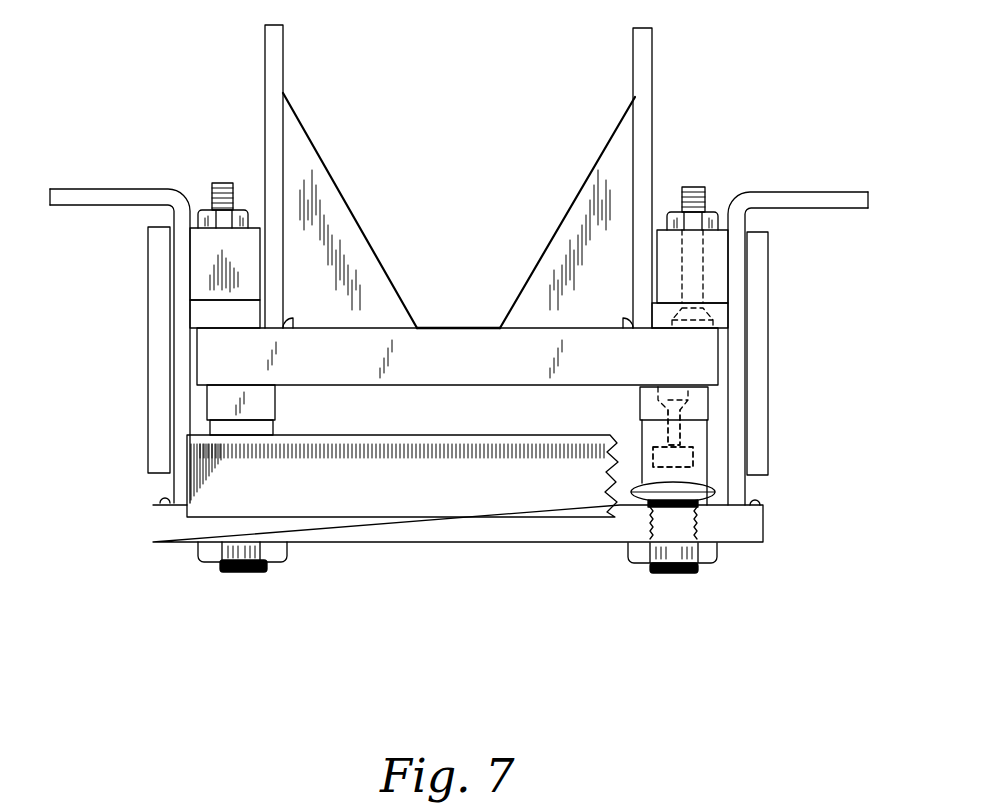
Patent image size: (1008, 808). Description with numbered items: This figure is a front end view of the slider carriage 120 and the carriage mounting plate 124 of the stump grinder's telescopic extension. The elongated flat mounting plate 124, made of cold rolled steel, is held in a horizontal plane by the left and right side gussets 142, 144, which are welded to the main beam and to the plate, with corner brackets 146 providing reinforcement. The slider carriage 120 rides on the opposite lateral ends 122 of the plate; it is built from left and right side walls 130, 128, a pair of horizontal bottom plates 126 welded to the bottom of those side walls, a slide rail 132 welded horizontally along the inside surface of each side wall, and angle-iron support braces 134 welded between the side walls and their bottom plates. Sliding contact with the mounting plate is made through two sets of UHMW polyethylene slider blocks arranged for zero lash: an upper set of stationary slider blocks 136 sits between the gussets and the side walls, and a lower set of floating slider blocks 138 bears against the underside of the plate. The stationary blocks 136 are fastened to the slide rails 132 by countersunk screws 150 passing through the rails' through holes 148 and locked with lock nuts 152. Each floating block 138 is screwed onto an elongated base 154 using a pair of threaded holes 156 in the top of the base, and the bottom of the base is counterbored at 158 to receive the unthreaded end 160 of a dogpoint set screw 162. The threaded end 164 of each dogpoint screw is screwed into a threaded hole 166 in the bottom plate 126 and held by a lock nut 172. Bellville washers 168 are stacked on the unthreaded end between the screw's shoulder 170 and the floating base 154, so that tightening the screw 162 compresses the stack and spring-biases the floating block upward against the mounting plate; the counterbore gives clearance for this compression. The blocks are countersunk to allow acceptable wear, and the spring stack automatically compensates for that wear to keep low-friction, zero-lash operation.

The slider carriage 120 is at (116, 518).
The lateral ends of plate 122 is at (210, 353).
The carriage mounting plate 124 is at (455, 328).
The bottom plates 126 is at (393, 543).
The right side wall 128 is at (770, 228).
The left side wall 130 is at (155, 217).
The slide rail 132 is at (198, 264).
The support braces 134 is at (392, 435).
The upper slider blocks 136 is at (203, 313).
The lower slider blocks 138 is at (213, 397).
The left side gusset 142 is at (633, 60).
The right side gusset 144 is at (283, 58).
The corner brackets 146 is at (307, 130).
The through holes 148 is at (703, 268).
The countersunk screws 150 is at (224, 172).
The lock nuts 152 is at (200, 212).
The elongated base 154 is at (217, 427).
The threaded holes 156 is at (682, 430).
The counterbore 158 is at (680, 455).
The unthreaded end 160 is at (740, 462).
The dogpoint set screw 162 is at (224, 586).
The threaded end 164 is at (268, 568).
The threaded holes 166 is at (697, 528).
The Bellville washers 168 is at (625, 485).
The shoulder 170 is at (645, 505).
The lock nuts 172 is at (197, 552).